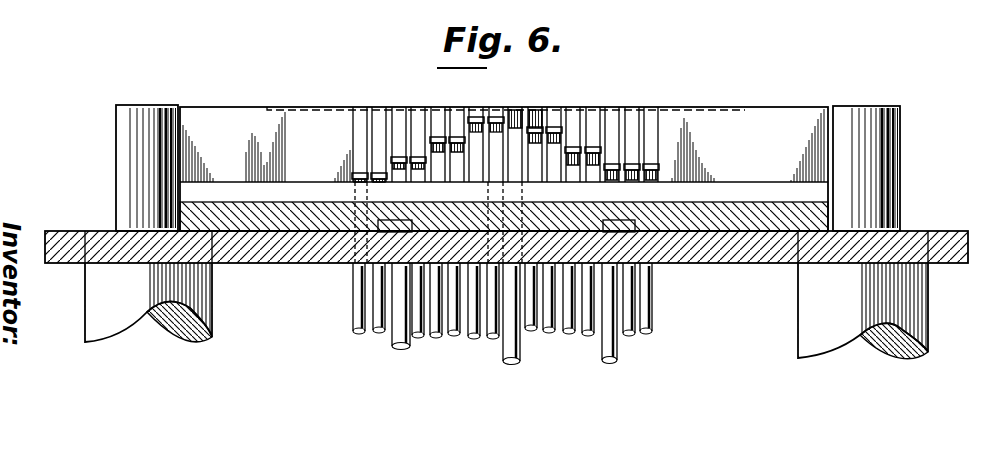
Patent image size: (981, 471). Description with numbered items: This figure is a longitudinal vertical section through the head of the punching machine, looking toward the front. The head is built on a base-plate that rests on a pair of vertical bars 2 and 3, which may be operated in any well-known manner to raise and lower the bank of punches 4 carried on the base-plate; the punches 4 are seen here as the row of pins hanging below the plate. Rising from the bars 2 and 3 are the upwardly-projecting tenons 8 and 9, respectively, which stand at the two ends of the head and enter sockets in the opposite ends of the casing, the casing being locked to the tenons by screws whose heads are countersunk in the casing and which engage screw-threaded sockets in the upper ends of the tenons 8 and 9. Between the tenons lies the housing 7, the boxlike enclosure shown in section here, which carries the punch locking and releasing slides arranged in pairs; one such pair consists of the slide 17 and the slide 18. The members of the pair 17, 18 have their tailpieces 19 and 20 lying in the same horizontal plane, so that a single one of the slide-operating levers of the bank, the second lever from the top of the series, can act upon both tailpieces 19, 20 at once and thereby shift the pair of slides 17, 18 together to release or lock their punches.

The vertical bar 2 is at (84, 297).
The vertical bar 3 is at (926, 308).
The bank of punches 4 is at (656, 297).
The housing 7 is at (504, 169).
The tenon 8 is at (128, 148).
The tenon 9 is at (880, 166).
The slide 17 is at (493, 112).
The slide 18 is at (477, 112).
The tailpiece 19 is at (502, 118).
The tailpiece 20 is at (470, 120).